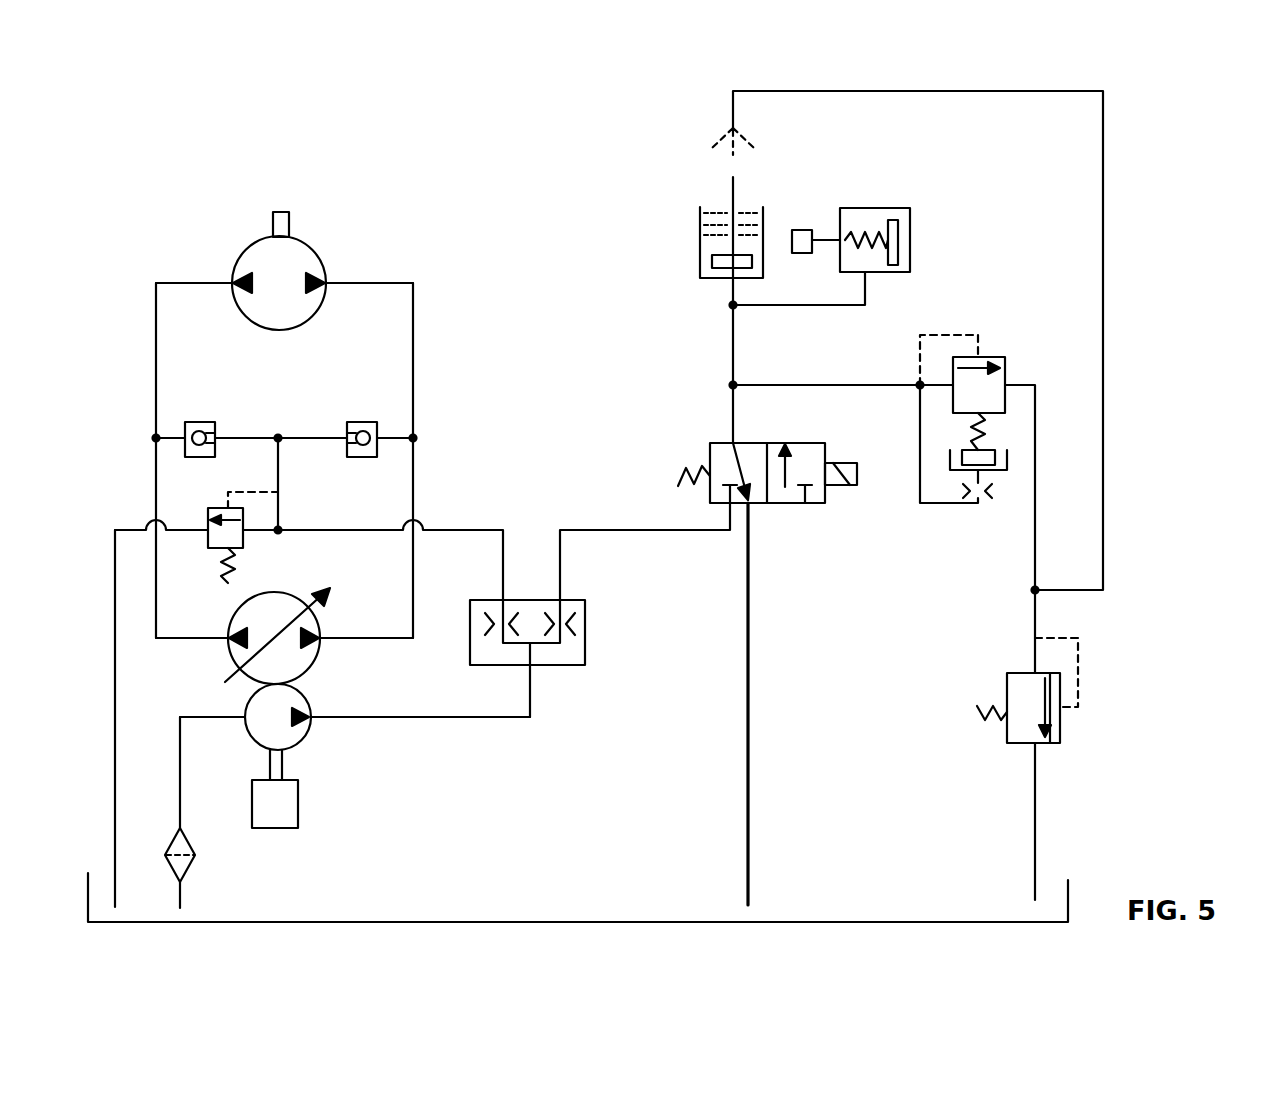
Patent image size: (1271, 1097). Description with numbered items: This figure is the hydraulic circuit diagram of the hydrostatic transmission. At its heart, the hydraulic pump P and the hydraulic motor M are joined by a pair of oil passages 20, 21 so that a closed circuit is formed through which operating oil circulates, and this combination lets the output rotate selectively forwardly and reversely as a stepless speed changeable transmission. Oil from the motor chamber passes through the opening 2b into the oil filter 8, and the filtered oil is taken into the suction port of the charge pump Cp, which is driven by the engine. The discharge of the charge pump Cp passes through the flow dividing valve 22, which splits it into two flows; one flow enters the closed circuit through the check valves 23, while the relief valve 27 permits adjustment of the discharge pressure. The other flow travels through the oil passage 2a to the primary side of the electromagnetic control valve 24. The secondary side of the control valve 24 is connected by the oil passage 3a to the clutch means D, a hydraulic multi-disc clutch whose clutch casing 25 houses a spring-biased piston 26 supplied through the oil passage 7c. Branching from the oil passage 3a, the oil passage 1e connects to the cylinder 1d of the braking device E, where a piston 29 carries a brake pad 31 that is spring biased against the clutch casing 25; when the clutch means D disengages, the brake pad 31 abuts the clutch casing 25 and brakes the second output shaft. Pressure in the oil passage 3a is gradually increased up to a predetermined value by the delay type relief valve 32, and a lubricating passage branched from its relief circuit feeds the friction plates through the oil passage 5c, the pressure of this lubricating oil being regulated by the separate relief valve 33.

The oil passage 20 is at (156, 322).
The oil passage 21 is at (413, 327).
The check valve 23 is at (200, 422).
The relief valve 27 is at (208, 543).
The flow dividing valve 22 is at (586, 647).
The oil passage 2a is at (650, 532).
The opening 2b is at (178, 902).
The oil filter 8 is at (194, 862).
The electromagnetic control valve 24 is at (710, 452).
The oil passage 3a is at (730, 410).
The clutch casing 25 is at (700, 217).
The piston 26 is at (712, 260).
The oil passage 7c is at (733, 288).
The oil passage 1e is at (854, 306).
The cylinder 1d is at (878, 208).
The piston 29 is at (912, 228).
The brake pad 31 is at (802, 230).
The delay type relief valve 32 is at (988, 357).
The relief valve 33 is at (1020, 745).
The oil passage 5c is at (1103, 418).
The hydraulic motor M is at (244, 260).
The hydraulic pump P is at (229, 655).
The charge pump Cp is at (306, 736).
The braking device E is at (918, 240).
The clutch means D is at (672, 243).